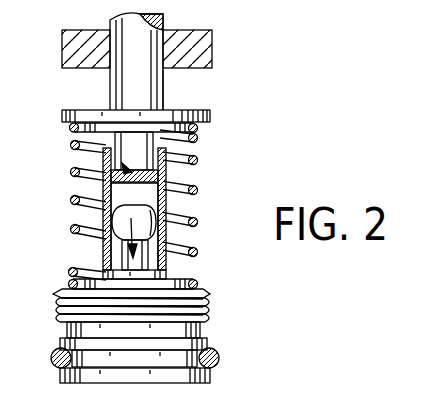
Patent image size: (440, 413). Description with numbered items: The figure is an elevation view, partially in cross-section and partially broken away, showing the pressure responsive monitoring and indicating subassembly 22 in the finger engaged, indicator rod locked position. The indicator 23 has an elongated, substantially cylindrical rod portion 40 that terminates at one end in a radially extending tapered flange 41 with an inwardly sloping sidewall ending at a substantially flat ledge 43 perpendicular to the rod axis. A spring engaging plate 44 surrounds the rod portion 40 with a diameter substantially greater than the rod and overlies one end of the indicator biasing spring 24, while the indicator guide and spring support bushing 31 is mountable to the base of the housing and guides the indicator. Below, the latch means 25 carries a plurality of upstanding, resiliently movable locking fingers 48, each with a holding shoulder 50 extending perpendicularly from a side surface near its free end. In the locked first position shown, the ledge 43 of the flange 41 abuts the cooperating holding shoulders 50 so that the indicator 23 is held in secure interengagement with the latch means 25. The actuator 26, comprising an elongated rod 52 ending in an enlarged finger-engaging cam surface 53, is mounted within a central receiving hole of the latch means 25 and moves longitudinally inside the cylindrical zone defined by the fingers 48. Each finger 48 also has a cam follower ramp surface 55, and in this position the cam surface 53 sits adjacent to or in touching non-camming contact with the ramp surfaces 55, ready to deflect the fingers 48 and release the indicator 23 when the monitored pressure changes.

The pressure responsive monitoring and indicating subassembly 22 is at (256, 51).
The indicator 23 is at (177, 93).
The indicator biasing spring 24 is at (70, 127).
The latch means 25 is at (215, 330).
The actuator 26 is at (104, 257).
The indicator guide and spring support bushing 31 is at (212, 30).
The rod portion 40 is at (122, 78).
The tapered flange 41 is at (103, 160).
The ledge 43 is at (162, 156).
The spring engaging plate 44 is at (210, 115).
The locking finger 48 is at (91, 197).
The holding shoulder 50 is at (100, 182).
The rod 52 is at (147, 253).
The cam surface 53 is at (143, 225).
The cam follower ramp surface 55 is at (100, 243).